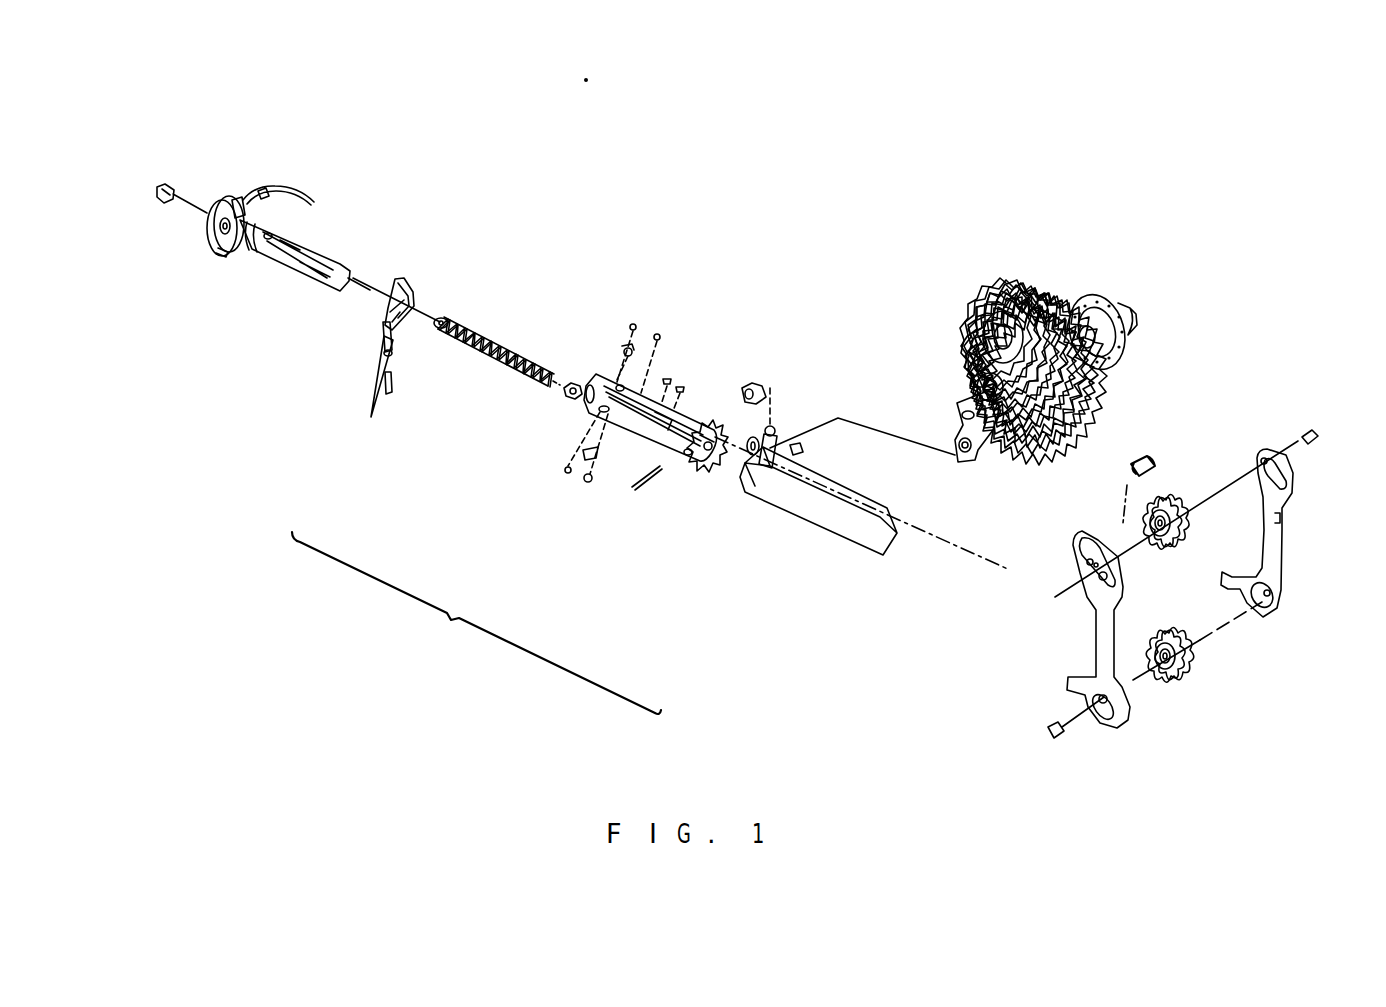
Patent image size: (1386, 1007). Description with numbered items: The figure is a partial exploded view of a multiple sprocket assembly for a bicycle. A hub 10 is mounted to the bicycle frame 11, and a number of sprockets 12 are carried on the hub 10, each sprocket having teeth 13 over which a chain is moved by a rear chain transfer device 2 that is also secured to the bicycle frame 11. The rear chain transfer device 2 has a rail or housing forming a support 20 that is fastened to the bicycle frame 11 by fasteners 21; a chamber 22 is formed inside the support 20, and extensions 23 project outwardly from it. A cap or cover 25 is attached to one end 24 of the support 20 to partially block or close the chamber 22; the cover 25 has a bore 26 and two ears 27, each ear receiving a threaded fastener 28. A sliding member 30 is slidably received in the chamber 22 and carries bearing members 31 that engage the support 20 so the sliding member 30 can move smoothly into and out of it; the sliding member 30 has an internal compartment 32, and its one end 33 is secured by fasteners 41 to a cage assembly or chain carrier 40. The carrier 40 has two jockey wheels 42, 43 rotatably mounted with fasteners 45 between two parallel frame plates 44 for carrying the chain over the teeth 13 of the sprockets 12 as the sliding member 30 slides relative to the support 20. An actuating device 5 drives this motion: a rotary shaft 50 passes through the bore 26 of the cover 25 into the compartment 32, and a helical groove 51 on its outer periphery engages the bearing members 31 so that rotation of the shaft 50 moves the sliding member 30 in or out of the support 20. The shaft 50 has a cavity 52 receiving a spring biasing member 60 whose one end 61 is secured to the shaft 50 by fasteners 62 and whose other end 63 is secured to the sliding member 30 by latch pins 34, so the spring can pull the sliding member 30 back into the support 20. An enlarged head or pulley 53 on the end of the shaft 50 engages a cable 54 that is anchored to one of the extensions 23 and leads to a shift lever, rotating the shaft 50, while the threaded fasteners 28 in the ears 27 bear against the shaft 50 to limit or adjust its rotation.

The rear chain transfer device 2 is at (609, 266).
The actuating device 5 is at (186, 158).
The hub 10 is at (1118, 300).
The bicycle frame 11 is at (957, 405).
The sprockets 12 is at (978, 240).
The teeth 13 is at (1063, 262).
The support 20 is at (832, 538).
The fasteners 21 is at (758, 382).
The chamber 22 is at (750, 437).
The extensions 23 is at (772, 428).
The one end of the support 24 is at (763, 498).
The cover 25 is at (420, 285).
The bore 26 is at (400, 279).
The ears 27 is at (388, 306).
The threaded fasteners 28 is at (370, 397).
The sliding member 30 is at (633, 447).
The bearing members 31 is at (680, 388).
The compartment 32 is at (598, 385).
The one end of the sliding member 33 is at (700, 424).
The latch pins 34 is at (654, 490).
The chain carrier 40 is at (1283, 541).
The fasteners 41 is at (1133, 455).
The jockey wheel 42 is at (1168, 495).
The jockey wheel 43 is at (1195, 665).
The frame plates 44 is at (1096, 636).
The fasteners 45 is at (1062, 738).
The rotary shaft 50 is at (324, 305).
The helical groove 51 is at (268, 256).
The cavity 52 is at (302, 245).
The pulley 53 is at (210, 250).
The cable 54 is at (285, 185).
The spring biasing member 60 is at (496, 365).
The one end of the spring 61 is at (447, 322).
The fasteners 62 is at (167, 207).
The other end of the spring 63 is at (572, 382).